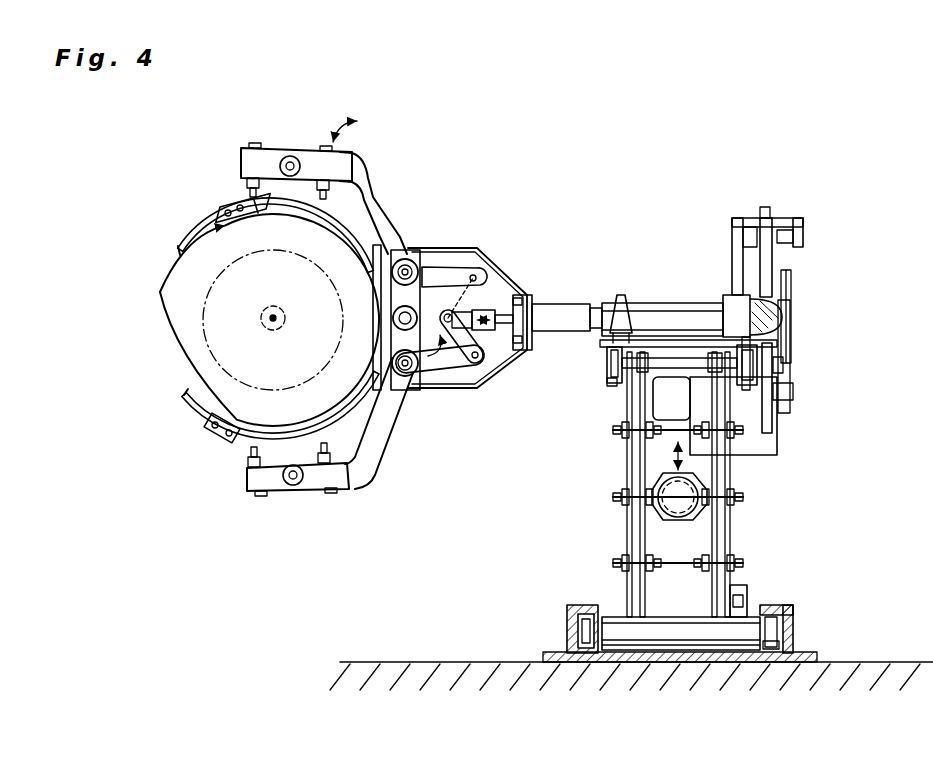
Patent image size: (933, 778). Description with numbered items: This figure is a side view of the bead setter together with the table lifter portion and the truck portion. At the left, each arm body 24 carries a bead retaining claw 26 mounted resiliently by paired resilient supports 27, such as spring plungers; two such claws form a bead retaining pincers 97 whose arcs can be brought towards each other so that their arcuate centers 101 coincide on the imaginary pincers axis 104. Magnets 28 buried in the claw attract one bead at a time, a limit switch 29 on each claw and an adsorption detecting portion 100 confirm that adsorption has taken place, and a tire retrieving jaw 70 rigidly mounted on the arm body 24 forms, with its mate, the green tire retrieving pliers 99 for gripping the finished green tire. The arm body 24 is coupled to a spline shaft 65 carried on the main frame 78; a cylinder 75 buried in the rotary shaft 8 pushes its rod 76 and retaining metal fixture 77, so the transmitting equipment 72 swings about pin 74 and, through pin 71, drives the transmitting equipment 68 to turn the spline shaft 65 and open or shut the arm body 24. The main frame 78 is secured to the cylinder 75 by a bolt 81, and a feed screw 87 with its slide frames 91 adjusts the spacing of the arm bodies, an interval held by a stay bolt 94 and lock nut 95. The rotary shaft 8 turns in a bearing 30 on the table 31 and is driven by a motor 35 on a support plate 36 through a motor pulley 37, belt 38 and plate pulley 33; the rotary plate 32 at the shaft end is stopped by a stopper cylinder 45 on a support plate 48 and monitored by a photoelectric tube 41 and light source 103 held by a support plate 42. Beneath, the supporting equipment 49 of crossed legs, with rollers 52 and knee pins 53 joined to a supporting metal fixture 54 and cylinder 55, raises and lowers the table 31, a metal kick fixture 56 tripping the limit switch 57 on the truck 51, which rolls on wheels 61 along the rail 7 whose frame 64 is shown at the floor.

The rail 7 is at (586, 657).
The rotary shaft 8 is at (660, 303).
The arm body 24 is at (385, 455).
The bead retaining claw 26 is at (263, 192).
The resilient support 27 is at (250, 178).
The magnet 28 is at (237, 207).
The limit switch 29 is at (240, 443).
The bearing 30 is at (621, 293).
The table 31 is at (606, 357).
The rotary plate 32 is at (766, 207).
The plate pulley 33 is at (790, 345).
The motor 35 is at (660, 393).
The support plate 36 is at (772, 350).
The motor pulley 37 is at (797, 393).
The belt 38 is at (790, 367).
The photoelectric tube 41 is at (789, 230).
The support plate 42 is at (745, 220).
The cylinder 45 is at (791, 322).
The support plate 48 is at (735, 312).
The supporting equipment 49 is at (647, 458).
The truck 51 is at (612, 616).
The roller 52 is at (612, 383).
The pin 53 is at (742, 497).
The supporting metal fixture 54 is at (697, 516).
The cylinder 55 is at (702, 503).
The metal kick fixture 56 is at (747, 590).
The limit switch 57 is at (795, 606).
The wheel 61 is at (580, 616).
The frame 64 is at (565, 630).
The spline shaft 65 is at (406, 258).
The transmitting equipment 68 is at (455, 393).
The tire retrieving jaw 70 is at (190, 250).
The pin 71 is at (466, 281).
The transmitting equipment 72 is at (478, 385).
The pin 74 is at (441, 325).
The cylinder 75 is at (590, 303).
The rod 76 is at (480, 358).
The retaining metal fixture 77 is at (494, 292).
The main frame 78 is at (420, 393).
The bolt 81 is at (531, 297).
The feed screw 87 is at (393, 322).
The slide frame 91 is at (396, 290).
The stay bolt 94 is at (297, 484).
The lock nut 95 is at (287, 482).
The bead retaining pincers 97 is at (254, 320).
The green tire retrieving pliers 99 is at (172, 250).
The adsorption detecting portion 100 is at (253, 213).
The arcuate center 101 is at (273, 316).
The light source 103 is at (745, 237).
The pincers axis 104 is at (290, 284).